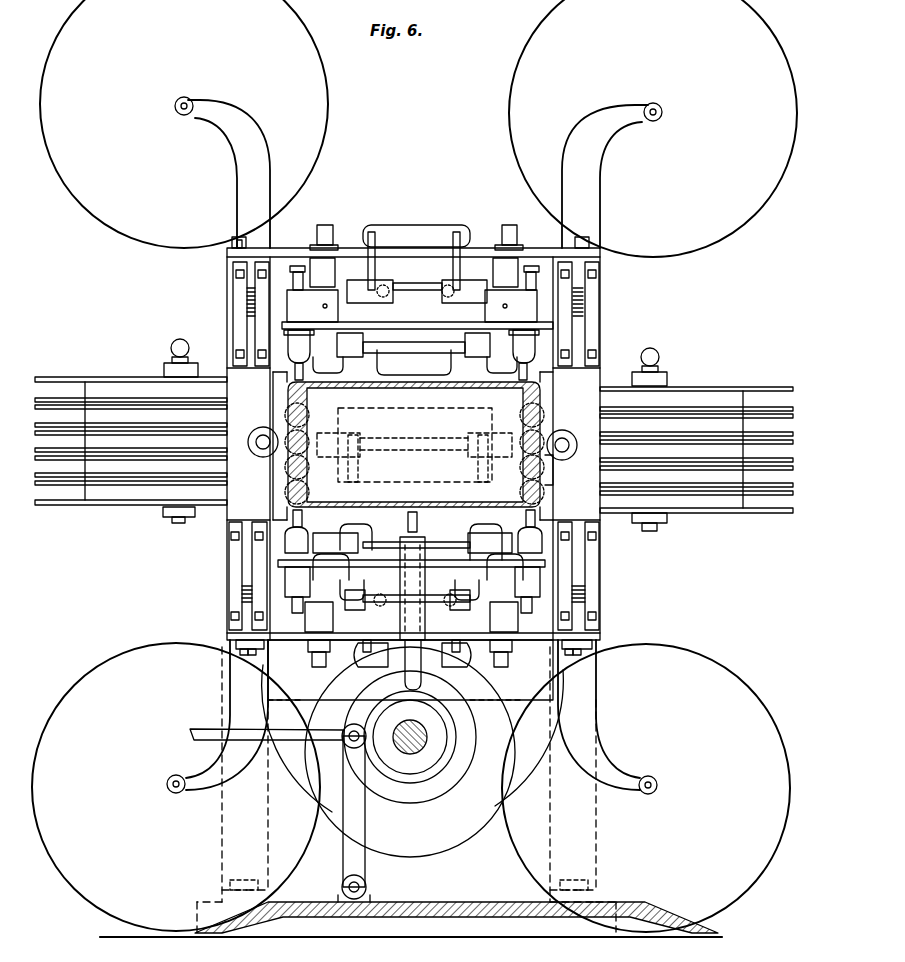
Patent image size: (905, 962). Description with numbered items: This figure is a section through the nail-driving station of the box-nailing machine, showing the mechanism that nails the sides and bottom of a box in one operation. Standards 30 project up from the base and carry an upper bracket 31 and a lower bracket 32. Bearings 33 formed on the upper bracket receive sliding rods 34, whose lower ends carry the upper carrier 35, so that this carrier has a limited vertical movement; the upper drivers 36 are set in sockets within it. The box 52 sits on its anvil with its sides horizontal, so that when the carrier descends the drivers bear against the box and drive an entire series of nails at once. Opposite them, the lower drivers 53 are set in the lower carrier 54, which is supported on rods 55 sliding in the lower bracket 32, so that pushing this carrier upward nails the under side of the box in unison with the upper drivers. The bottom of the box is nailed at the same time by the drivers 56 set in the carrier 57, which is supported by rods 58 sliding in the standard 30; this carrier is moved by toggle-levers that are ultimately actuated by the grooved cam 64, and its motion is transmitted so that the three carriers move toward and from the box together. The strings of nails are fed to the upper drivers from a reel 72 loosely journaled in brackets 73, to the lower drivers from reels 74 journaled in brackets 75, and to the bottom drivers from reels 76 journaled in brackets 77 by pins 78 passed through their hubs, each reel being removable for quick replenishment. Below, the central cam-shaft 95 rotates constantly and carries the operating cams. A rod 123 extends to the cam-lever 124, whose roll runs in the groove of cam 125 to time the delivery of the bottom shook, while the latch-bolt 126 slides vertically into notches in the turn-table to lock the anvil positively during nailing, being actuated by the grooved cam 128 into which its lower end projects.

The standards 30 is at (614, 354).
The upper bracket 31 is at (240, 303).
The lower bracket 32 is at (233, 585).
The bearings 33 is at (413, 290).
The rods 34 is at (333, 236).
The carrier 35 is at (410, 330).
The drivers 36 is at (411, 355).
The box 52 is at (413, 446).
The lower drivers 53 is at (290, 532).
The carrier 54 is at (548, 568).
The rods 55 is at (322, 664).
The drivers 56 is at (290, 490).
The carrier 57 is at (553, 470).
The rods 58 is at (262, 442).
The cam 64 is at (392, 812).
The reel 72 is at (248, 116).
The brackets 73 is at (612, 115).
The reels 74 is at (411, 787).
The brackets 75 is at (212, 790).
The reels 76 is at (414, 429).
The brackets 77 is at (212, 517).
The pins 78 is at (176, 345).
The cam-shaft 95 is at (406, 726).
The rod 123 is at (285, 744).
The cam-lever 124 is at (358, 860).
The cam 125 is at (448, 762).
The latch-bolt 126 is at (420, 530).
The cam 128 is at (458, 790).